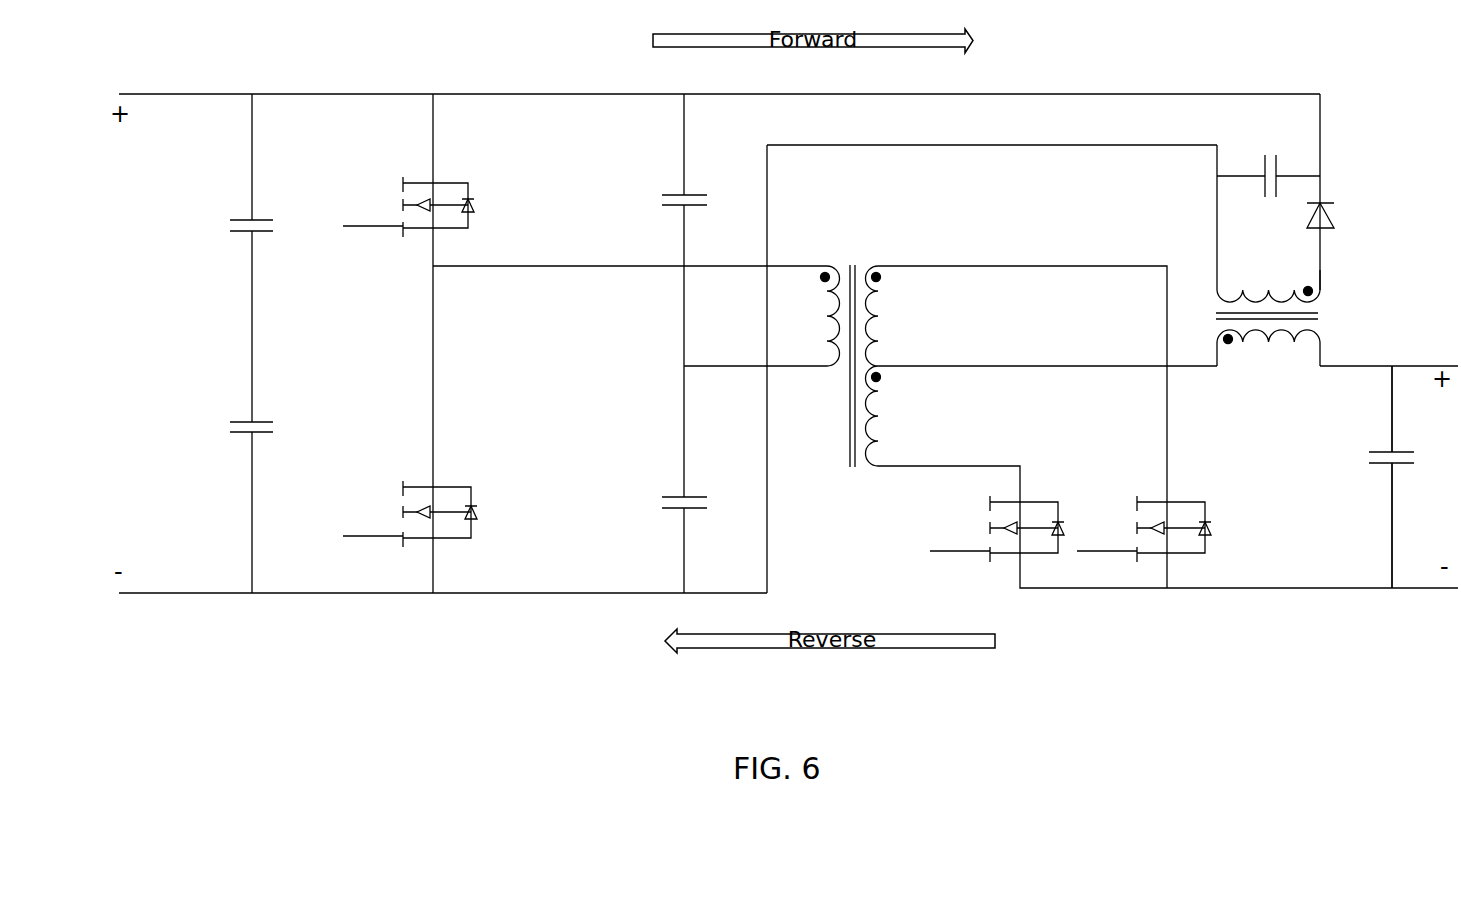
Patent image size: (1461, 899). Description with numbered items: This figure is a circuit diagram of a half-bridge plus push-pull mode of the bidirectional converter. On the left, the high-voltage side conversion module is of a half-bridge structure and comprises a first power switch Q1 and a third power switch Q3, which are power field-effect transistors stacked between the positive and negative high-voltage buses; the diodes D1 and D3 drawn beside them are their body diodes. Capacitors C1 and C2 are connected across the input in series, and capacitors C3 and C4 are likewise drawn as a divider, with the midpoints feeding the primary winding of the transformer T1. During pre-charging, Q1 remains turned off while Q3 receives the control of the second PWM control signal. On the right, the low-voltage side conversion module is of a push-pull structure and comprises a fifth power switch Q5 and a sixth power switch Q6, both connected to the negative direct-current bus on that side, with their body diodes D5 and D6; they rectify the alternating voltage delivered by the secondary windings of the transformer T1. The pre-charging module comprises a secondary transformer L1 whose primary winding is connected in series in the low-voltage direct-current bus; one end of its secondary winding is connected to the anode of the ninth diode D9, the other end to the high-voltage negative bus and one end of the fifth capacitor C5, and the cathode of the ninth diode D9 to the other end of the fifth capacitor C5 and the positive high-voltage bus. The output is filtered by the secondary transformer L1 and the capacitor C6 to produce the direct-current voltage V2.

The input capacitor C1 is at (266, 226).
The input capacitor C2 is at (266, 427).
The capacitor C3 is at (698, 201).
The capacitor C4 is at (698, 504).
The fifth capacitor C5 is at (1268, 186).
The output capacitor C6 is at (1375, 457).
The first power switch Q1 is at (405, 200).
The third power switch Q3 is at (407, 507).
The fifth power switch Q5 is at (994, 524).
The sixth power switch Q6 is at (1145, 516).
The body diode D1 is at (470, 205).
The body diode D3 is at (471, 512).
The body diode D5 is at (1058, 527).
The body diode D6 is at (1205, 527).
The ninth diode D9 is at (1336, 192).
The transformer T1 is at (657, 349).
The secondary transformer L1 is at (1253, 255).
The direct-current voltage V2 is at (1420, 477).